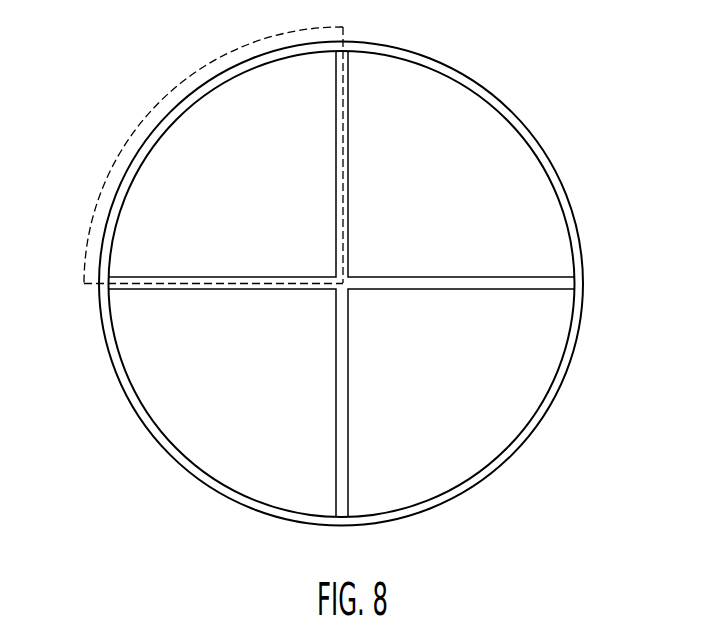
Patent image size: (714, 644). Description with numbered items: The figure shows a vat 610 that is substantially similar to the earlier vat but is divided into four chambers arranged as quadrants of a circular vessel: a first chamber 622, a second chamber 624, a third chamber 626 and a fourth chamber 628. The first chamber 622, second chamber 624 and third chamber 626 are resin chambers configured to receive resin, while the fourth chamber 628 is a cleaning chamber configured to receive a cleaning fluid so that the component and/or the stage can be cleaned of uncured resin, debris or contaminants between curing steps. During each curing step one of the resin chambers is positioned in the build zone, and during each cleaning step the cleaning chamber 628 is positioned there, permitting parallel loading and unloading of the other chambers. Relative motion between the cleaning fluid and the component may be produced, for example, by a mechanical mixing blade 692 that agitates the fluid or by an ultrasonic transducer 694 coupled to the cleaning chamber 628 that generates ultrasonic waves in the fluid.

The vat 610 is at (73, 147).
The first chamber 622 is at (262, 187).
The second chamber 624 is at (448, 187).
The third chamber 626 is at (258, 378).
The fourth chamber 628 is at (455, 378).
The mechanical mixing blade 692 is at (550, 158).
The ultrasonic transducer 694 is at (530, 435).